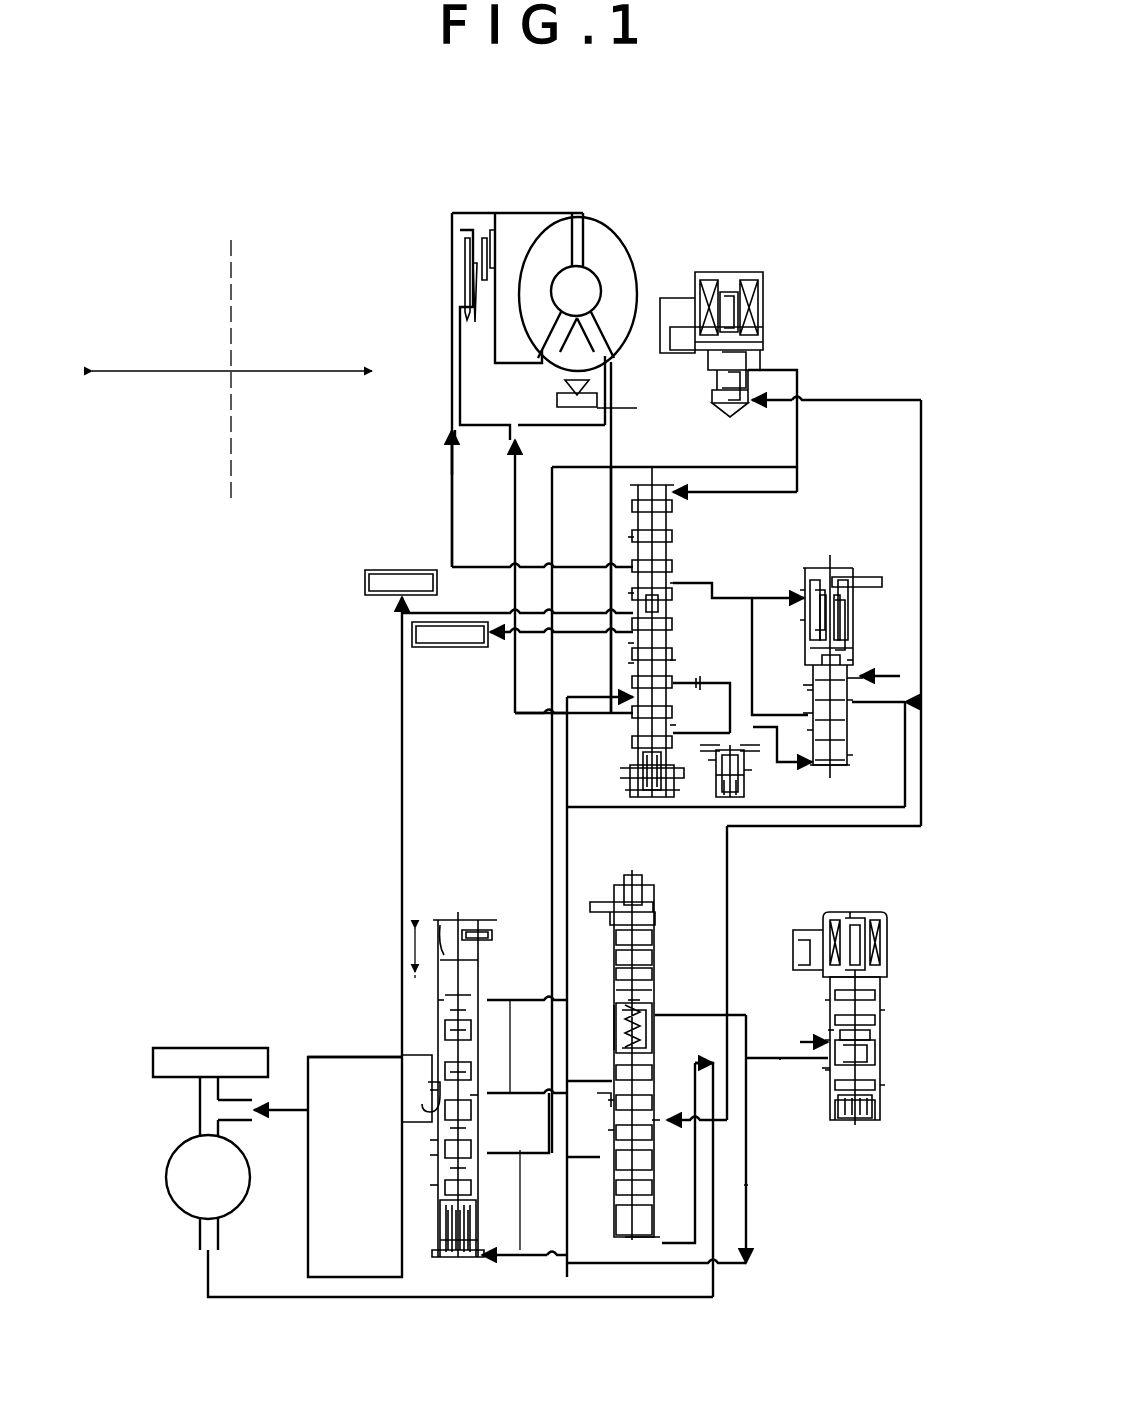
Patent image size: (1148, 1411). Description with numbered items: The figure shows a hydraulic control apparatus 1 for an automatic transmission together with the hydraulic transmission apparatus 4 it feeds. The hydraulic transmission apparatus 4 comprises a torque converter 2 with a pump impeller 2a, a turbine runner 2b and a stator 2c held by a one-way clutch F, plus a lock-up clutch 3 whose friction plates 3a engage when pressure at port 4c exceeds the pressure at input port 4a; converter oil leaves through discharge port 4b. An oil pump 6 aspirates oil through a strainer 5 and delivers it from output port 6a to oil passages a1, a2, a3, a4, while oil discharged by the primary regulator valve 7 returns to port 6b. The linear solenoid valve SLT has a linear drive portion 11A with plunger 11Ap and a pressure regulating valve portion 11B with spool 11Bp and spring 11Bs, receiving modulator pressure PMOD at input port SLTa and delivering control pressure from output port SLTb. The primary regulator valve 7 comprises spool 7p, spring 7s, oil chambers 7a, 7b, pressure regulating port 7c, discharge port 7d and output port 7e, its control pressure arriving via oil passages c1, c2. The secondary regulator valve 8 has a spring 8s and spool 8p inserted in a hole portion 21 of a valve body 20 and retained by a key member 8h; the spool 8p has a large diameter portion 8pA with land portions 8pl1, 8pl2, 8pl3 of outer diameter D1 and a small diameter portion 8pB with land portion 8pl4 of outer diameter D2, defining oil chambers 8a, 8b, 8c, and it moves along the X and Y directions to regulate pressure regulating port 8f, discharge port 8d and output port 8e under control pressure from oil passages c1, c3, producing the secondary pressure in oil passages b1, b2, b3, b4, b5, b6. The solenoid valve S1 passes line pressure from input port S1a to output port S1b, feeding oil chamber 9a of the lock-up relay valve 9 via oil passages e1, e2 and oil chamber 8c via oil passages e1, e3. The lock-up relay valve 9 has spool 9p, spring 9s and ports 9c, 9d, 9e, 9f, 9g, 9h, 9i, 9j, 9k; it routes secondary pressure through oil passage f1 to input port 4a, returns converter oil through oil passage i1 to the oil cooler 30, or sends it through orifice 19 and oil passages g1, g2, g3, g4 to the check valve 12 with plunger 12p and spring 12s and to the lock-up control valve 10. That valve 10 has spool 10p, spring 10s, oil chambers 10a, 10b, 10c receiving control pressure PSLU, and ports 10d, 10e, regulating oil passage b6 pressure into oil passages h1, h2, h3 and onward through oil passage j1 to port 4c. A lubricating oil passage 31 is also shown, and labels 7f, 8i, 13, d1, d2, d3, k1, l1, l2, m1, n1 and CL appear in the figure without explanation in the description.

The hydraulic control apparatus for an automatic transmission 1 is at (468, 202).
The torque converter 2 is at (570, 220).
The pump impeller 2a is at (620, 252).
The turbine runner 2b is at (534, 302).
The stator 2c is at (565, 364).
The lock-up clutch 3 is at (498, 235).
The friction plates 3a is at (475, 305).
The hydraulic transmission apparatus 4 is at (515, 172).
The input port 4a is at (520, 436).
The discharge port 4b is at (614, 432).
The port 4c is at (450, 428).
The strainer 5 is at (216, 1044).
The oil pump 6 is at (178, 1142).
The output port 6a is at (205, 1236).
The port 6b is at (245, 1118).
The primary regulator valve 7 is at (643, 882).
The oil chamber 7a is at (640, 1008).
The oil chamber 7b is at (650, 1243).
The pressure regulating port 7c is at (650, 1125).
The discharge port 7d is at (610, 1168).
The output port 7e is at (606, 1084).
The regulator valve port 7f is at (612, 1098).
The spool 7p is at (616, 1132).
The spring 7s is at (612, 1026).
The secondary regulator valve 8 is at (460, 900).
The oil chamber 8a is at (474, 965).
The oil chamber 8b is at (442, 1004).
The oil chamber 8c is at (432, 1158).
The discharge port 8d is at (438, 1062).
The output port 8e is at (436, 1118).
The pressure regulating port 8f is at (472, 1098).
The key member 8h is at (492, 936).
The secondary regulator valve port 8i is at (436, 1102).
The spool 8p is at (470, 1018).
The land portion 8pl1 is at (472, 1043).
The land portion 8pl2 is at (472, 1070).
The land portion 8pl3 is at (472, 1130).
The land portion 8pl4 is at (472, 1170).
The large diameter portion 8pA is at (514, 1070).
The small diameter portion 8pB is at (528, 1200).
The spring 8s is at (476, 1212).
The lock-up relay valve 9 is at (690, 520).
The oil chamber 9a is at (658, 480).
The port 9c is at (622, 538).
The port 9d is at (622, 593).
The port 9e is at (630, 647).
The port 9f is at (618, 663).
The port 9g is at (628, 697).
The port 9h is at (630, 716).
The port 9i is at (676, 585).
The port 9j is at (672, 686).
The port 9k is at (670, 732).
The spool 9p is at (674, 605).
The spring 9s is at (660, 752).
The lock-up control valve 10 is at (840, 556).
The oil chamber 10a is at (826, 780).
The oil chamber 10b is at (845, 600).
The oil chamber 10c is at (850, 670).
The port 10d is at (852, 706).
The port 10e is at (810, 713).
The spool 10p is at (810, 688).
The spring 10s is at (840, 620).
The linear drive portion 11A is at (888, 968).
The plunger 11Ap is at (862, 945).
The pressure regulating valve portion 11B is at (883, 1063).
The spool 11Bp is at (862, 1040).
The spring 11Bs is at (875, 1102).
The check valve 12 is at (752, 790).
The plunger 12p is at (718, 776).
The spring 12s is at (718, 797).
The oil passage 13 is at (450, 612).
The orifice 19 is at (700, 668).
The valve body 20 is at (488, 920).
The hole portion 21 is at (444, 940).
The oil cooler 30 is at (454, 650).
The lubricating oil passage 31 is at (388, 566).
The solenoid valve S1 is at (745, 266).
The input port S1a is at (745, 404).
The output port S1b is at (762, 368).
The linear solenoid valve SLT is at (852, 908).
The input port SLTa is at (830, 1030).
The output port SLTb is at (822, 1070).
The oil passage a1 is at (622, 1299).
The oil passage a2 is at (676, 1118).
The oil passage a3 is at (693, 1176).
The oil passage a4 is at (730, 940).
The oil passage b1 is at (602, 1092).
The oil passage b2 is at (544, 1110).
The oil passage b3 is at (528, 1000).
The oil passage b4 is at (569, 856).
The oil passage b5 is at (569, 776).
The oil passage b6 is at (690, 808).
The oil passage c1 is at (780, 1060).
The oil passage c2 is at (686, 1016).
The oil passage c3 is at (748, 1190).
The oil passage d1 is at (569, 1240).
The oil passage d2 is at (360, 1056).
The oil passage d3 is at (280, 1108).
The oil passage e1 is at (798, 438).
The oil passage e2 is at (798, 478).
The oil passage e3 is at (692, 466).
The oil passage f1 is at (532, 716).
The oil passage g1 is at (722, 688).
The oil passage g2 is at (760, 740).
The oil passage g3 is at (708, 730).
The oil passage g4 is at (740, 748).
The oil passage h1 is at (754, 636).
The oil passage h2 is at (756, 598).
The oil passage h3 is at (722, 598).
The oil passage i1 is at (608, 503).
The oil passage j1 is at (566, 566).
The oil passage k1 is at (572, 634).
The oil passage l1 is at (404, 790).
The oil passage l2 is at (400, 610).
The oil passage m1 is at (868, 680).
The oil passage n1 is at (805, 1050).
The outer diameter D1 is at (430, 1145).
The outer diameter D2 is at (436, 1182).
The one-way clutch F is at (557, 401).
The X direction X is at (415, 986).
The Y direction Y is at (414, 935).
The control pressure PSLU is at (880, 675).
The modulator pressure PMOD is at (810, 1035).
The center line CL is at (232, 355).